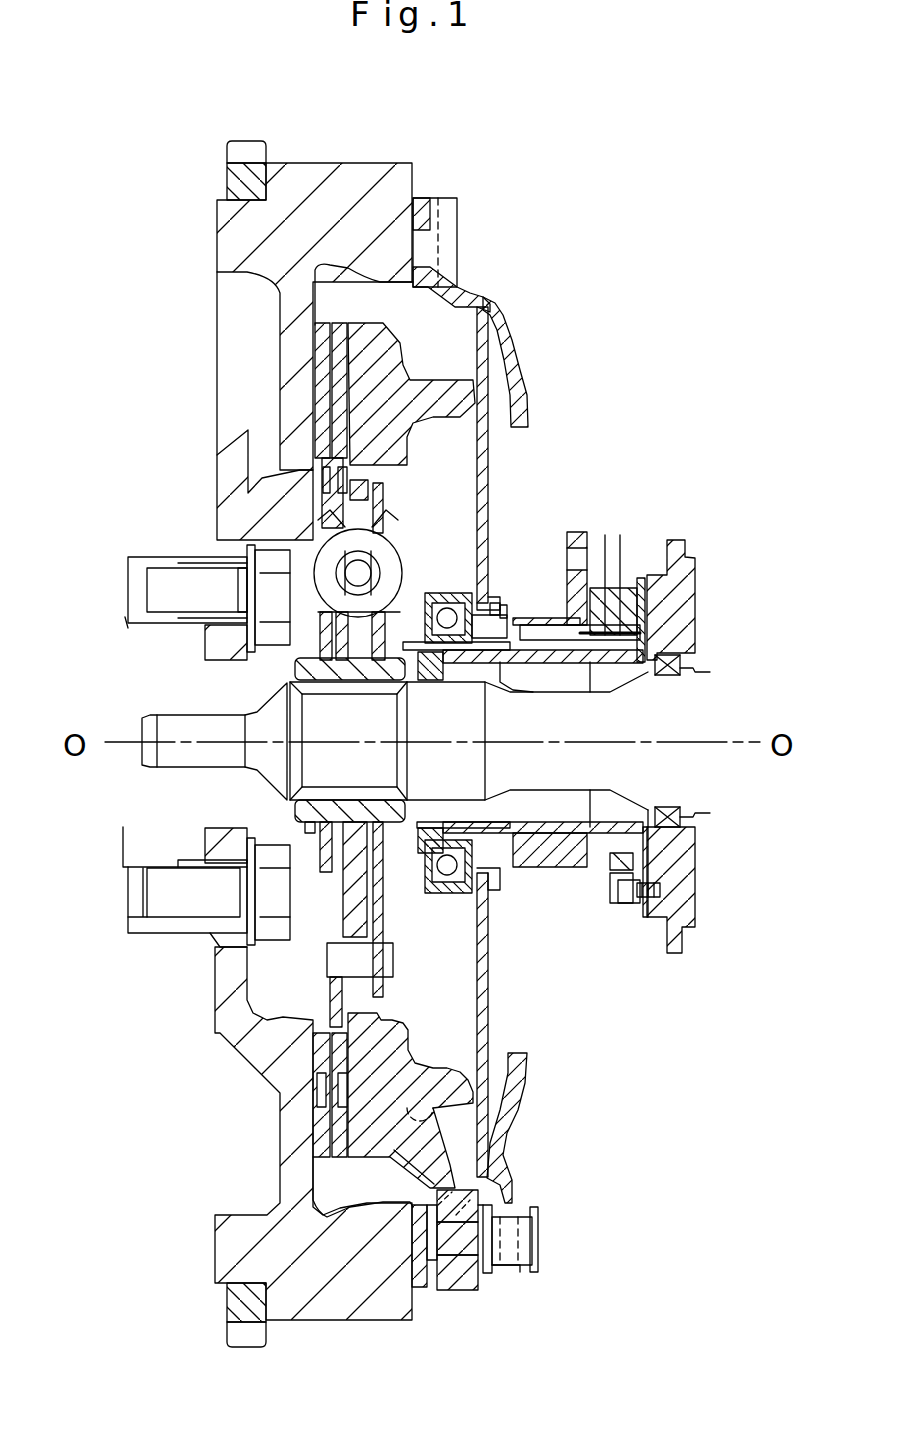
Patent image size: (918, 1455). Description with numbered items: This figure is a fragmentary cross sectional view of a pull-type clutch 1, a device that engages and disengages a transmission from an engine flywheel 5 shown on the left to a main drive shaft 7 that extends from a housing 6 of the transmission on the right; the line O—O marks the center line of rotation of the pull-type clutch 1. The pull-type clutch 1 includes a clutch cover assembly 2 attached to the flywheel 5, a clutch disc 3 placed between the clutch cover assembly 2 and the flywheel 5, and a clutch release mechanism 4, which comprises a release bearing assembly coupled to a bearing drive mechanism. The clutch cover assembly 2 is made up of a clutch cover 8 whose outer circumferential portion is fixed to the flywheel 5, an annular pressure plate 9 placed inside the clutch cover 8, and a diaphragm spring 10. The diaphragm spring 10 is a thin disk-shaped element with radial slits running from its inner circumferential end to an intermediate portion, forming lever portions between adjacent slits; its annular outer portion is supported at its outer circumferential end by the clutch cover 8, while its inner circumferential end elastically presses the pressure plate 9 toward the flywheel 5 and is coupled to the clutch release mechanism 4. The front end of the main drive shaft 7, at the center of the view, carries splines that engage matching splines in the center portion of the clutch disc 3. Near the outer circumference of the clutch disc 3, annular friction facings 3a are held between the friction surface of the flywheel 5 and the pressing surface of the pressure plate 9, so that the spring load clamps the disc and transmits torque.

The pull-type clutch 1 is at (638, 290).
The clutch cover assembly 2 is at (482, 272).
The clutch disc 3 is at (290, 494).
The friction facings 3a is at (318, 330).
The clutch release mechanism 4 is at (540, 545).
The flywheel 5 is at (245, 256).
The housing 6 is at (682, 572).
The main drive shaft 7 is at (667, 713).
The clutch cover 8 is at (510, 353).
The pressure plate 9 is at (395, 368).
The diaphragm spring 10 is at (483, 480).